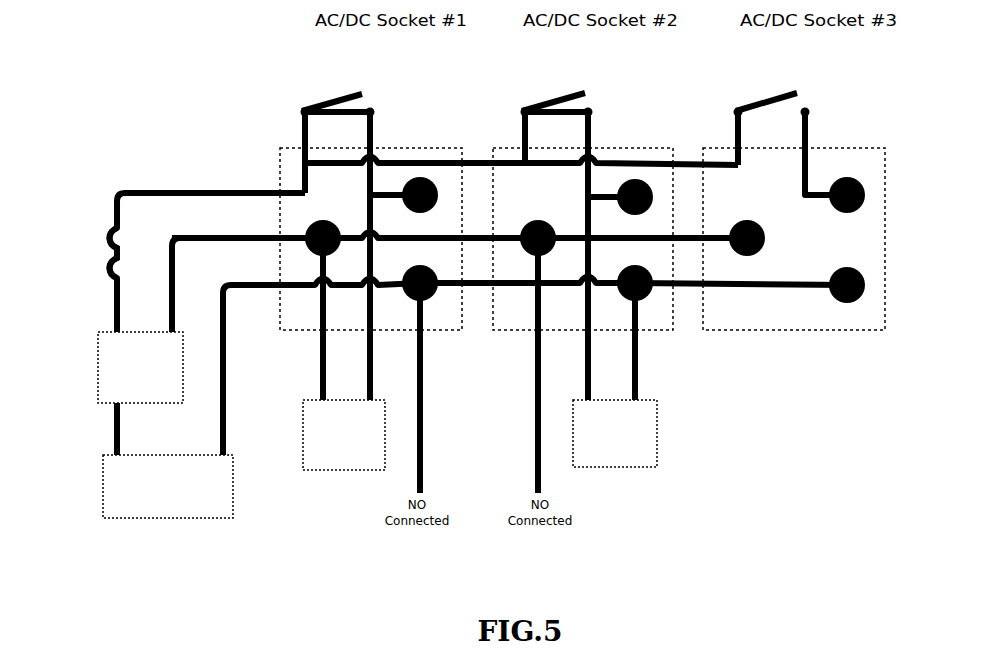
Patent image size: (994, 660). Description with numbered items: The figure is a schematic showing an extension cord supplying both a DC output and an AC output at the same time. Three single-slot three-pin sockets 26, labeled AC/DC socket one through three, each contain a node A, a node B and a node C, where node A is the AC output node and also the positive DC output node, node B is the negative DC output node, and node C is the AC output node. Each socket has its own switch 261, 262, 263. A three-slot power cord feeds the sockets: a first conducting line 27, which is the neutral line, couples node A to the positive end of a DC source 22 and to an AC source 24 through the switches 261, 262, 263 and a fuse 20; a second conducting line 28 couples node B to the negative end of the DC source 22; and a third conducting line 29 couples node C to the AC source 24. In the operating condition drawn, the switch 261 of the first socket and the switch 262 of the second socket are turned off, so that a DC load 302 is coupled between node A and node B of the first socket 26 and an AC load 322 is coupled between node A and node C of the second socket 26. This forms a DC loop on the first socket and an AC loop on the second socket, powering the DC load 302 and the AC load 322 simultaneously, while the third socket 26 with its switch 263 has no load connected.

The fuse 20 is at (100, 246).
The DC source 22 is at (98, 362).
The AC source 24 is at (103, 490).
The 3-pin socket 26 is at (462, 330).
The first conducting line 27 is at (186, 190).
The second conducting line 28 is at (176, 254).
The third conducting line 29 is at (228, 364).
The switch 261 is at (364, 78).
The switch 262 is at (606, 82).
The switch 263 is at (802, 78).
The DC load 302 is at (305, 458).
The AC load 322 is at (657, 428).